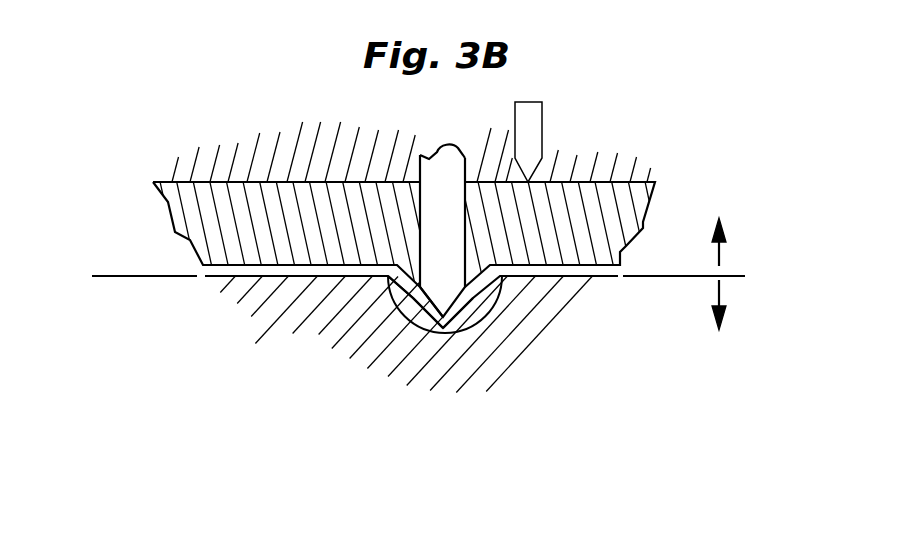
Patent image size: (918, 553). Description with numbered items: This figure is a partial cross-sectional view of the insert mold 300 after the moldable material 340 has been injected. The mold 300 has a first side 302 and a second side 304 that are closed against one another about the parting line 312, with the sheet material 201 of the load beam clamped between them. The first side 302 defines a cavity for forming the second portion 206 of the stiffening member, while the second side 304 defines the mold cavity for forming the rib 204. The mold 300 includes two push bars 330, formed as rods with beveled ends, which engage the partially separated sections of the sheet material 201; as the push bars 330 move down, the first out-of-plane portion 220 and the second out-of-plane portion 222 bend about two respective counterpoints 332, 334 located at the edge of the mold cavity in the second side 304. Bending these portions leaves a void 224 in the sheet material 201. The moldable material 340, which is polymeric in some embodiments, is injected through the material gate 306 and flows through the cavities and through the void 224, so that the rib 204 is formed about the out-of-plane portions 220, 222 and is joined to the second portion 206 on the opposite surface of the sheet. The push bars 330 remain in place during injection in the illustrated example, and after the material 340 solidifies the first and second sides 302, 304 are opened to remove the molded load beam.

The insert mold 300 is at (163, 121).
The material gate 306 is at (516, 114).
The second portion 206 is at (594, 213).
The sheet material 201 is at (595, 264).
The moldable material 340 is at (197, 215).
The parting line 312 is at (797, 228).
The first side 302 is at (742, 242).
The second side 304 is at (742, 305).
The counterpoint 334 is at (505, 279).
The first out-of-plane portion 220 is at (499, 294).
The rib 204 is at (479, 301).
The push bars 330 is at (438, 261).
The counterpoint 332 is at (392, 280).
The second out-of-plane portion 222 is at (413, 302).
The void 224 is at (444, 326).